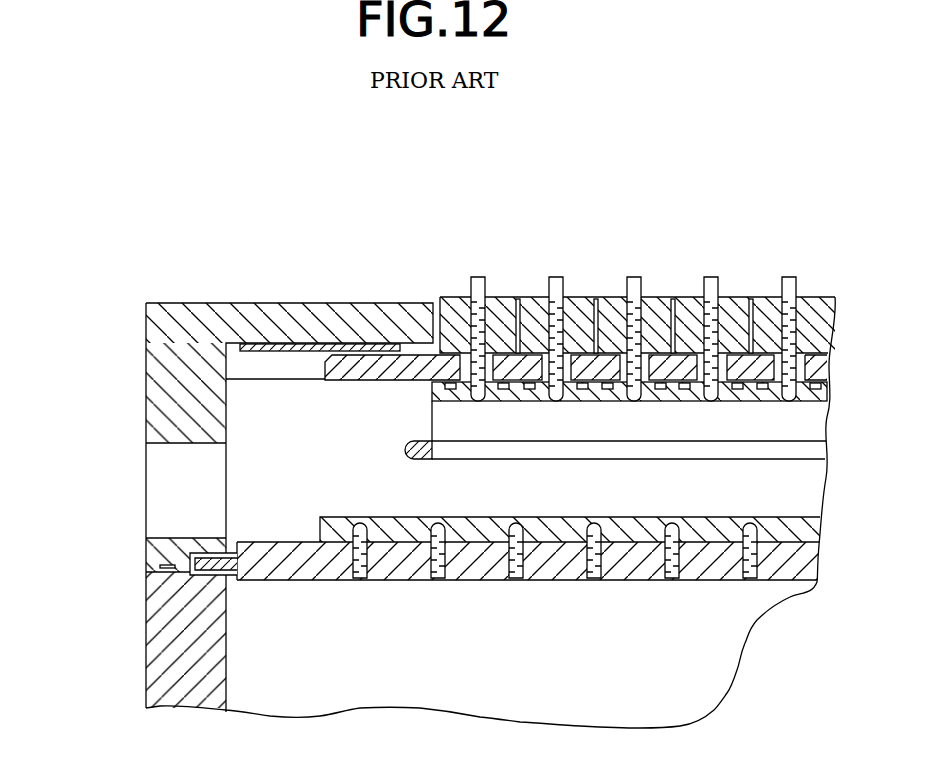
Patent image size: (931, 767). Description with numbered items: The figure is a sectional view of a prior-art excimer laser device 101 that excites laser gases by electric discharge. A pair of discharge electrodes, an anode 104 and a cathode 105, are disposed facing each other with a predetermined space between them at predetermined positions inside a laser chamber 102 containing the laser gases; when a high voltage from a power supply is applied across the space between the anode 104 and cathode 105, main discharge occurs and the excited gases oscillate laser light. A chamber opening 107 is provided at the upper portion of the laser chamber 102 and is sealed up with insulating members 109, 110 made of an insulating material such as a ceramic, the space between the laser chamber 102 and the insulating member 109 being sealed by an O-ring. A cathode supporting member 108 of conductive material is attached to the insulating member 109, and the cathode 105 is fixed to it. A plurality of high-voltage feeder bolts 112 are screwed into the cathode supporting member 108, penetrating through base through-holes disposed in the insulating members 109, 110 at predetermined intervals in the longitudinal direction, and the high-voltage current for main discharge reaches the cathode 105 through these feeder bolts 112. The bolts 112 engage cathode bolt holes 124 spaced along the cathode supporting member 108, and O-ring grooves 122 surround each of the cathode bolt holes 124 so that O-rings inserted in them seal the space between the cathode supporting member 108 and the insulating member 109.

The excimer laser device 101 is at (652, 211).
The laser chamber 102 is at (146, 355).
The anode 104 is at (330, 517).
The cathode 105 is at (605, 452).
The chamber opening 107 is at (435, 333).
The cathode supporting member 108 is at (443, 392).
The insulating member 109 is at (326, 362).
The insulating member 110 is at (604, 300).
The high-voltage feeder bolts 112 is at (476, 277).
The O-ring grooves 122 is at (497, 400).
The cathode bolt holes 124 is at (563, 402).